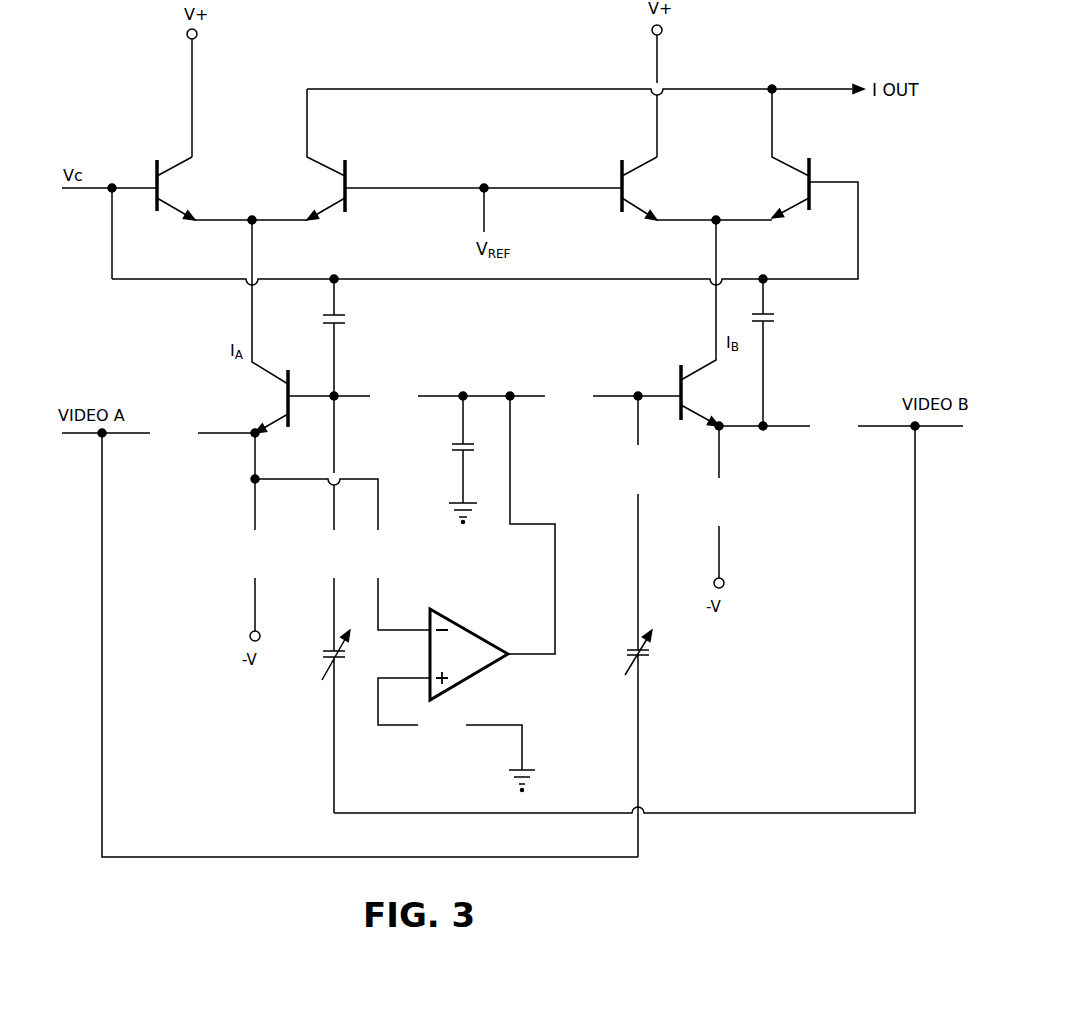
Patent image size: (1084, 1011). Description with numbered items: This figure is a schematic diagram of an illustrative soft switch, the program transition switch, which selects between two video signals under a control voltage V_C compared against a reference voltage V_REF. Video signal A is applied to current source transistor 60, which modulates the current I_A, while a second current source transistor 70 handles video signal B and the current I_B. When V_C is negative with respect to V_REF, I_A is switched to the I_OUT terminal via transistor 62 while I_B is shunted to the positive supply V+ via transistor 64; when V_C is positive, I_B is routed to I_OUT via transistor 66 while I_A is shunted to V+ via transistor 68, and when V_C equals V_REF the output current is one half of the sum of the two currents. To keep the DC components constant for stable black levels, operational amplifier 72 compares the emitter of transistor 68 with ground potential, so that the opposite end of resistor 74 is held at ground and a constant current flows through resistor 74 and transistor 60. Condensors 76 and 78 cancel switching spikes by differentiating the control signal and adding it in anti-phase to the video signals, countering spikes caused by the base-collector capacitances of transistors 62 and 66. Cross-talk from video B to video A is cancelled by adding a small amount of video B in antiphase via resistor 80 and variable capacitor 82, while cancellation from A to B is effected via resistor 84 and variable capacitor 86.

The current source transistor 60 is at (289, 391).
The transistor 62 is at (346, 172).
The transistor 64 is at (620, 172).
The transistor 66 is at (811, 172).
The transistor 68 is at (157, 173).
The transistor 70 is at (679, 385).
The operational amplifier 72 is at (470, 641).
The resistor 74 is at (249, 564).
The condensor 76 is at (342, 318).
The condensor 78 is at (770, 314).
The resistor 80 is at (330, 571).
The variable capacitor 82 is at (340, 660).
The resistor 84 is at (645, 452).
The variable capacitor 86 is at (644, 658).